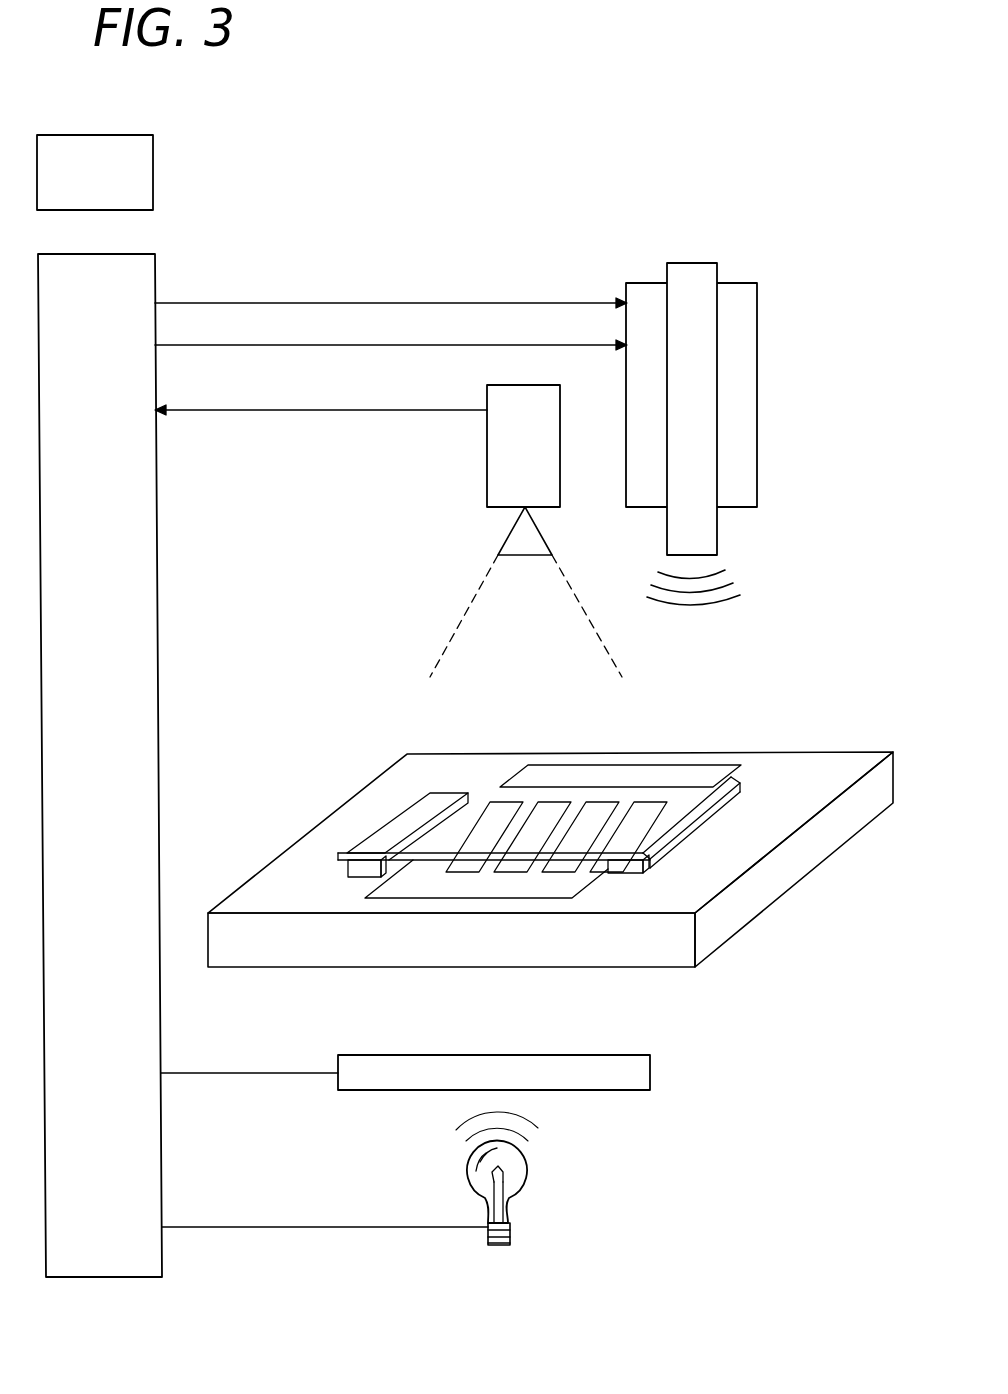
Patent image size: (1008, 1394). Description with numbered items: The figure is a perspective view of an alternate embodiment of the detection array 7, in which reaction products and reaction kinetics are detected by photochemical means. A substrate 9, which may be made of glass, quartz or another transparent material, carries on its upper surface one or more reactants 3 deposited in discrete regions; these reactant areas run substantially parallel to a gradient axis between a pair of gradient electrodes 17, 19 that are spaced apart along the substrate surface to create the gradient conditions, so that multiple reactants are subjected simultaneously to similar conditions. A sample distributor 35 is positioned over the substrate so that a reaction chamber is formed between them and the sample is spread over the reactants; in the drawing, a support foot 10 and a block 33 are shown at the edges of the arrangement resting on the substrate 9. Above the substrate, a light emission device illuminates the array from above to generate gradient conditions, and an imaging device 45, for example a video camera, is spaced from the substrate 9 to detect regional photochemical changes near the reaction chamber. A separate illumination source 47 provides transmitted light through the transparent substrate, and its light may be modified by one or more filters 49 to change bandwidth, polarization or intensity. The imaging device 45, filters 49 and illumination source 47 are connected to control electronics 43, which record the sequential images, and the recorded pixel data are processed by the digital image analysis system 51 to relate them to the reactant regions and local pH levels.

The reactant 3 is at (499, 834).
The detection array 7 is at (479, 242).
The substrate 9 is at (551, 955).
The support foot 10 is at (649, 866).
The gradient electrode 17 is at (403, 888).
The gradient electrode 19 is at (622, 773).
The reference block 33 is at (433, 808).
The sample distributor 35 is at (720, 778).
The control electronics 43 is at (112, 733).
The imaging device 45 is at (541, 442).
The illumination source 47 is at (528, 1163).
The filter 49 is at (491, 1085).
The digital image analysis / analysis system 51 is at (153, 172).